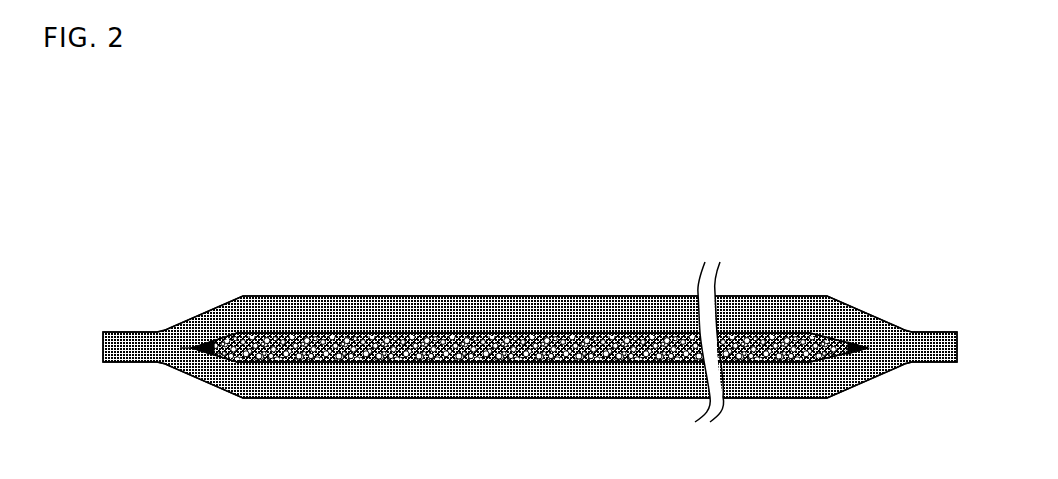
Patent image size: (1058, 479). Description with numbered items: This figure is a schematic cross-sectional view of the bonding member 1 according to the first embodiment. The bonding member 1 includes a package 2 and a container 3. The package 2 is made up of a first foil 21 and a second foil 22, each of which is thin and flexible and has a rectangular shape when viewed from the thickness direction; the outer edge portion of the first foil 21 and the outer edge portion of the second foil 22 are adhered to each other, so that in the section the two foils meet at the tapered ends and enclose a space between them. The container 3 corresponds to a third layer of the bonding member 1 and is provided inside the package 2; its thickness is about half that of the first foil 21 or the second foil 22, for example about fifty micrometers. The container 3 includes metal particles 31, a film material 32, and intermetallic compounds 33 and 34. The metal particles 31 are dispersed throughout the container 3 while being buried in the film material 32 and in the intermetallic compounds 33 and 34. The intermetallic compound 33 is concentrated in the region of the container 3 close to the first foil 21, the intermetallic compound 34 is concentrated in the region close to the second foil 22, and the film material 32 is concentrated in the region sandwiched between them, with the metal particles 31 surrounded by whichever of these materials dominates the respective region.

The bonding member 1 is at (530, 271).
The package 2 is at (530, 302).
The first foil 21 is at (613, 317).
The second foil 22 is at (658, 382).
The container 3 is at (524, 272).
The metal particles 31 is at (330, 338).
The film material 32 is at (378, 338).
The intermetallic compound 33 is at (395, 338).
The intermetallic compound 34 is at (460, 338).